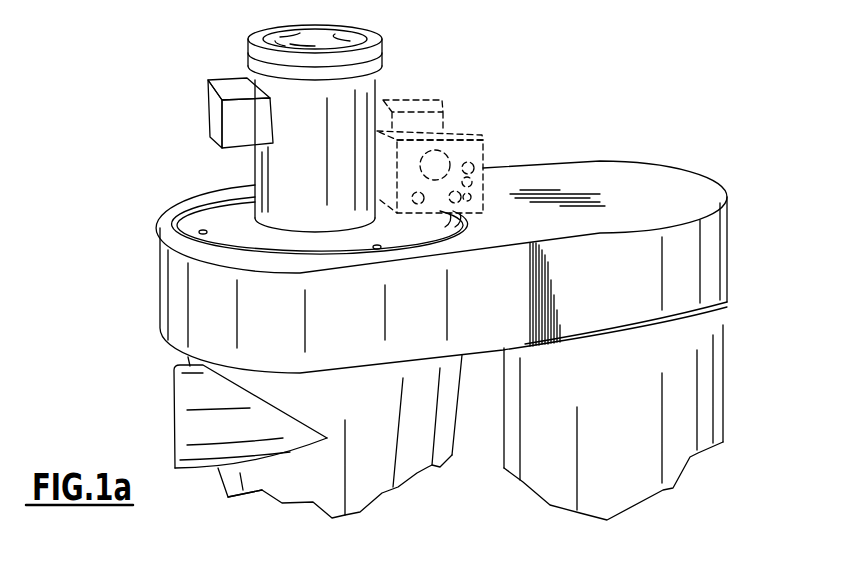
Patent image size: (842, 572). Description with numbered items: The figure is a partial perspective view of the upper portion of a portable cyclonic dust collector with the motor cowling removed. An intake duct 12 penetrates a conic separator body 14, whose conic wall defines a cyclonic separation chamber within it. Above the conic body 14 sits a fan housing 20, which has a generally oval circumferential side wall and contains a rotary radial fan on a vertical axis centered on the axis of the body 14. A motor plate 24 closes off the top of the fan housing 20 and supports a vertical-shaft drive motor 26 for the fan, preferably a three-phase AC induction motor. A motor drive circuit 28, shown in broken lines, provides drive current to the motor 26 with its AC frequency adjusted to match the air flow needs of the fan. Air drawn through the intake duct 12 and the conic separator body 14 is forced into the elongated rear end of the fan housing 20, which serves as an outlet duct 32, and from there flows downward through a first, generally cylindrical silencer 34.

The intake duct 12 is at (172, 420).
The conic separator body 14 is at (317, 500).
The fan housing 20 is at (160, 285).
The motor plate 24 is at (210, 212).
The drive motor 26 is at (377, 92).
The motor drive circuit 28 is at (485, 147).
The outlet duct 32 is at (653, 143).
The first silencer 34 is at (728, 395).